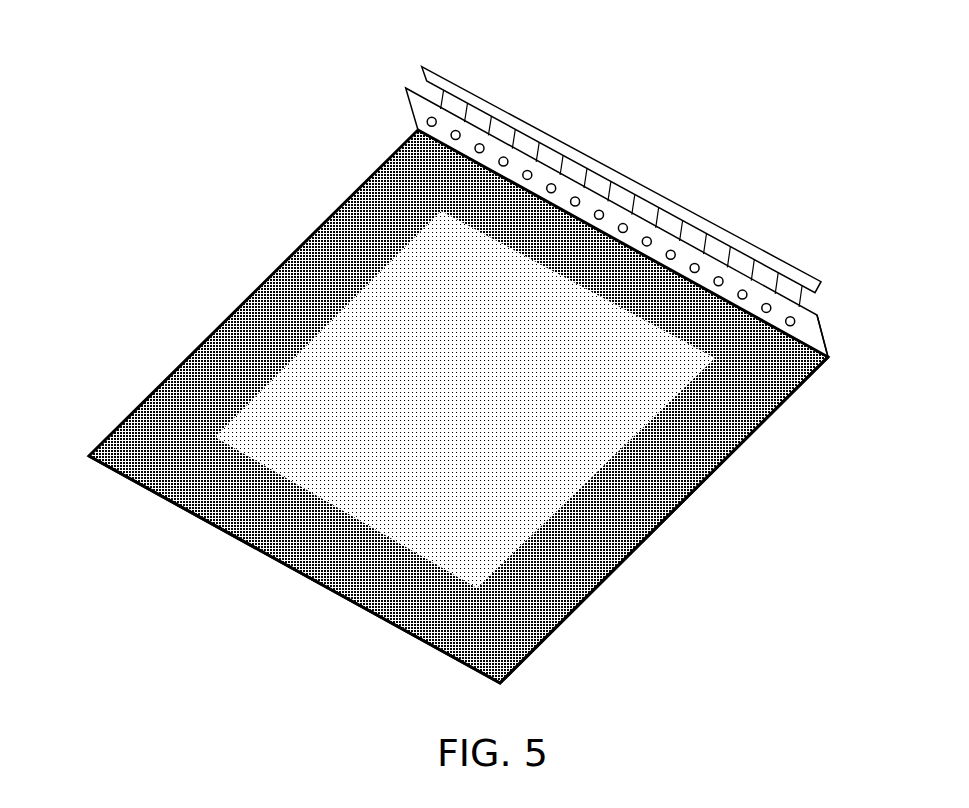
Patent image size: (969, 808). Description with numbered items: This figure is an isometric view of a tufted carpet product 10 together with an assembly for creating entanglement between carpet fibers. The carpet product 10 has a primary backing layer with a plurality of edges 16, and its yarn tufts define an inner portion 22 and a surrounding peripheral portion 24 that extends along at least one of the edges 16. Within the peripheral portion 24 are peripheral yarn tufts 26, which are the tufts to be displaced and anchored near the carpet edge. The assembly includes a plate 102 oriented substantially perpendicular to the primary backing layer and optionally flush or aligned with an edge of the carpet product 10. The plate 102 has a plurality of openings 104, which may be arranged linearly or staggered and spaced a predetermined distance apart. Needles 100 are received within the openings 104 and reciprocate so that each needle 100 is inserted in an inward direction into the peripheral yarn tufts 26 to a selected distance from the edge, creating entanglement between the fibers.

The carpet product 10 is at (469, 353).
The edges 16 is at (313, 584).
The inner portion 22 is at (537, 451).
The peripheral portion 24 is at (323, 293).
The peripheral yarn tufts 26 is at (178, 415).
The needle 100 is at (624, 232).
The plate 102 is at (830, 358).
The openings 104 is at (429, 117).